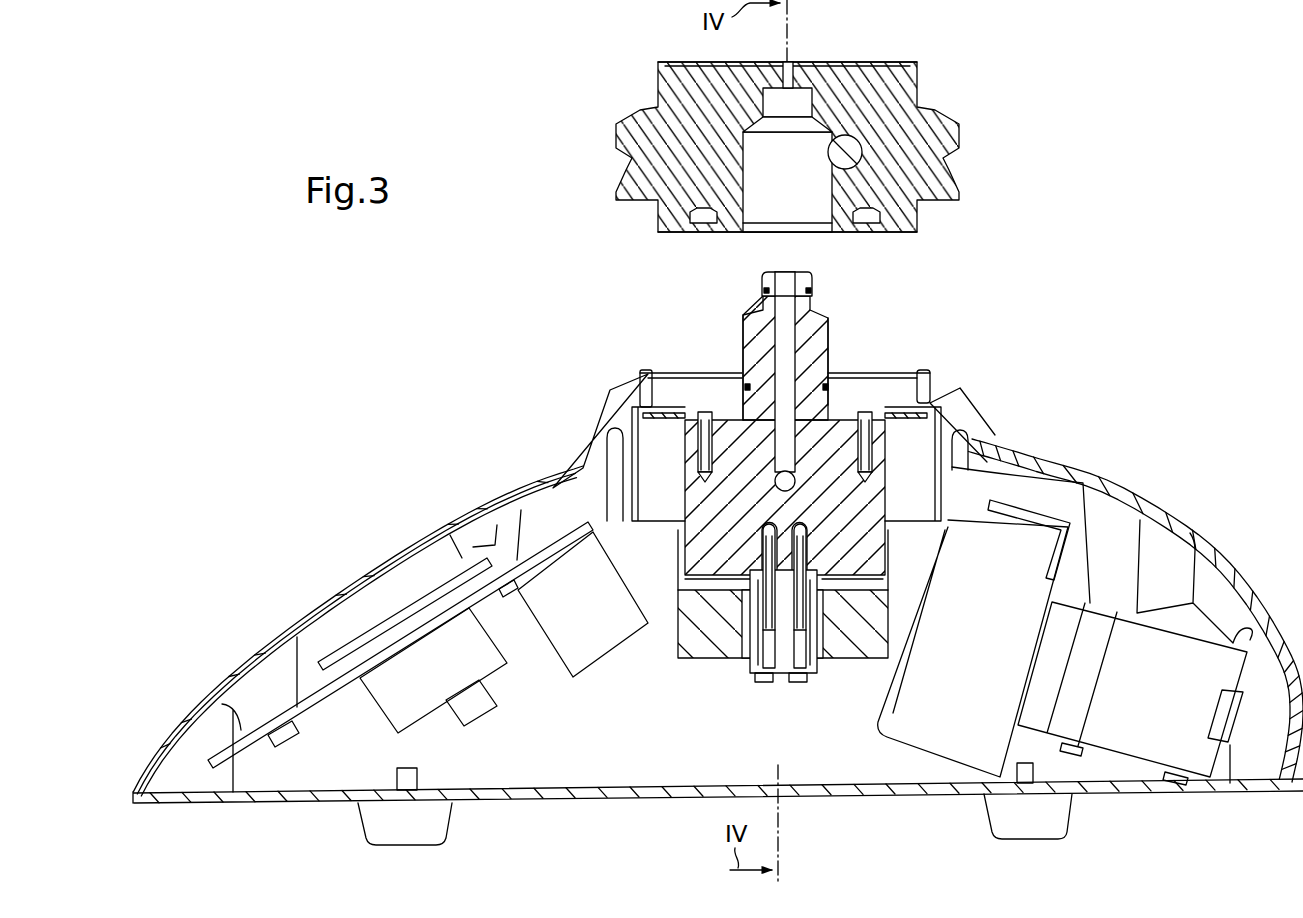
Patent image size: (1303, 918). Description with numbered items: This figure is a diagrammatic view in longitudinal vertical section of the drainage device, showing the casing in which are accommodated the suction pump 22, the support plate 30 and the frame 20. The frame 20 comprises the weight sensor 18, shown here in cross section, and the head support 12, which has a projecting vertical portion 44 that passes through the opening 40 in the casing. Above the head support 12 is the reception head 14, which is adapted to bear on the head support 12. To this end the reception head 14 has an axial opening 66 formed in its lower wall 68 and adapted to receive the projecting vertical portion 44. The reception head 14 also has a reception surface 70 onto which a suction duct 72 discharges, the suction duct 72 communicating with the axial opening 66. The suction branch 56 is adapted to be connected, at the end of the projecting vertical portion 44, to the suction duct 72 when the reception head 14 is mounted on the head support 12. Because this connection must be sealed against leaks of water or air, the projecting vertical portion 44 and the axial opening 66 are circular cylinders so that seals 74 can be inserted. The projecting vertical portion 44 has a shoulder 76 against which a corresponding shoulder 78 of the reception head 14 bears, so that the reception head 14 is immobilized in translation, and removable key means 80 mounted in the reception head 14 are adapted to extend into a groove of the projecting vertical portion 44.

The head support 12 is at (710, 513).
The reception head 14 is at (630, 118).
The weight sensor 18 is at (782, 640).
The frame 20 is at (698, 642).
The suction pump 22 is at (1013, 540).
The support plate 30 is at (322, 692).
The opening 40 is at (640, 380).
The projecting vertical portion 44 is at (760, 337).
The suction branch 56 is at (790, 363).
The axial opening 66 is at (768, 219).
The lower wall 68 is at (673, 238).
The reception surface 70 is at (882, 60).
The suction duct 72 is at (785, 72).
The seals 74 is at (760, 286).
The shoulder 76 is at (832, 295).
The shoulder 78 is at (761, 139).
The removable key means 80 is at (856, 148).